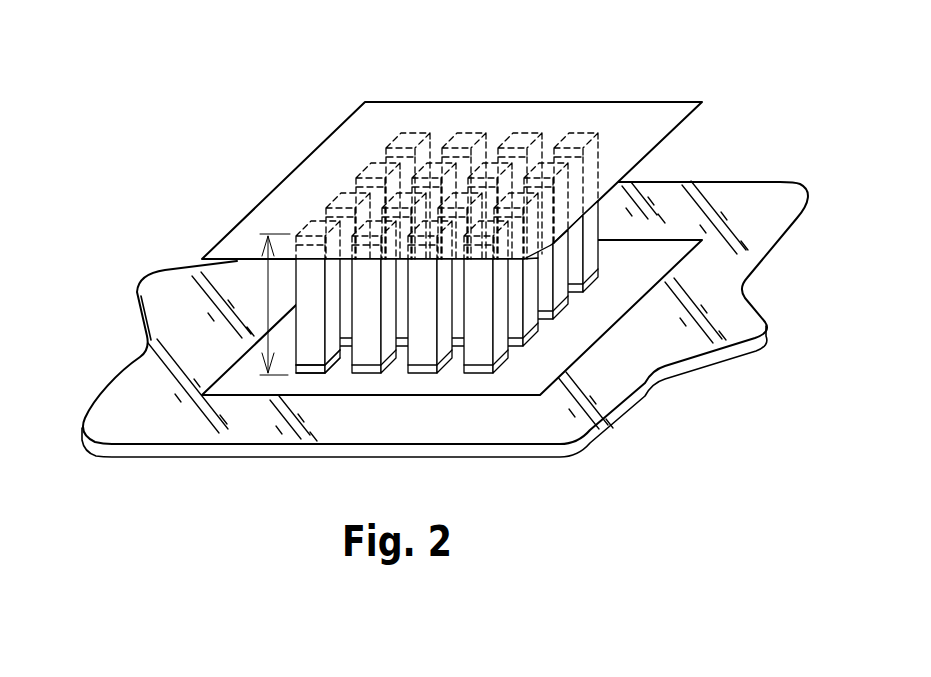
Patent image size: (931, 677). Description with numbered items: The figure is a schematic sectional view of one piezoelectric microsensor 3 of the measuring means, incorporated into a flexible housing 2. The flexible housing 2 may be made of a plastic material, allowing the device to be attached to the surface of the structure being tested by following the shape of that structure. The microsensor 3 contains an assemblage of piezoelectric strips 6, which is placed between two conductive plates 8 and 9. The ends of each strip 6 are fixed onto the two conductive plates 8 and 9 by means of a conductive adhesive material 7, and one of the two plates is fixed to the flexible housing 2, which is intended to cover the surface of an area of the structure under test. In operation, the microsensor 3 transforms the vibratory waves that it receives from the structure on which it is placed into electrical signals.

The flexible housing 2 is at (507, 425).
The piezoelectric microsensor 3 is at (402, 256).
The piezoelectric strips 6 is at (587, 257).
The conductive adhesive material 7 is at (313, 372).
The conductive plate 8 is at (606, 102).
The conductive plate 9 is at (580, 352).